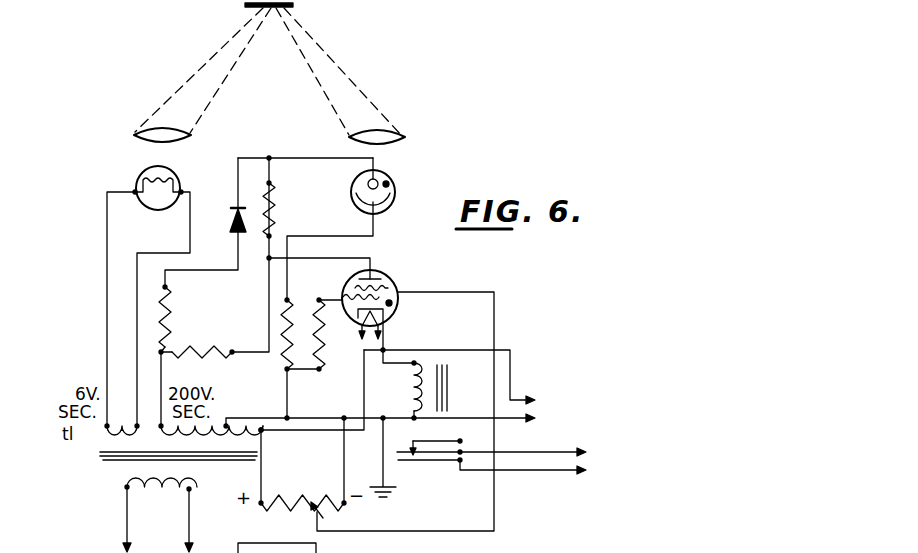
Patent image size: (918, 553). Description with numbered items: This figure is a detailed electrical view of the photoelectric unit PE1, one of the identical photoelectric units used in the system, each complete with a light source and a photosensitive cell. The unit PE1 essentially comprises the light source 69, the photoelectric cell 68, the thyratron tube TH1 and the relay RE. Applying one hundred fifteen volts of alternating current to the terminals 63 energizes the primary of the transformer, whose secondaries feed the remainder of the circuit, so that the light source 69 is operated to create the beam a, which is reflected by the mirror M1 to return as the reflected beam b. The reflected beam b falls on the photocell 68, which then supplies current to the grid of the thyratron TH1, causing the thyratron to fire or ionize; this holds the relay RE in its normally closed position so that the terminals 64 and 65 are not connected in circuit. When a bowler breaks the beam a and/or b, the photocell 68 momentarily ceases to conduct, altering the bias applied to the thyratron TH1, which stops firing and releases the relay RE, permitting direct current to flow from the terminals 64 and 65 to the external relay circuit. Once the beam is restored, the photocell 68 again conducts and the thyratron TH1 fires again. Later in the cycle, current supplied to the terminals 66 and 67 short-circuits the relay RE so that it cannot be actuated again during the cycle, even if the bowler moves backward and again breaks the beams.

The mirror M1 is at (281, 7).
The beam a is at (177, 97).
The reflected beam b is at (370, 104).
The light source 69 is at (170, 170).
The photoelectric cell 68 is at (384, 175).
The thyratron tube TH1 is at (394, 279).
The photoelectric unit PE1 is at (100, 321).
The relay RE is at (413, 378).
The terminal 67 is at (518, 400).
The terminal 66 is at (512, 421).
The terminal 65 is at (527, 452).
The terminal 64 is at (542, 471).
The terminals 63 is at (140, 550).